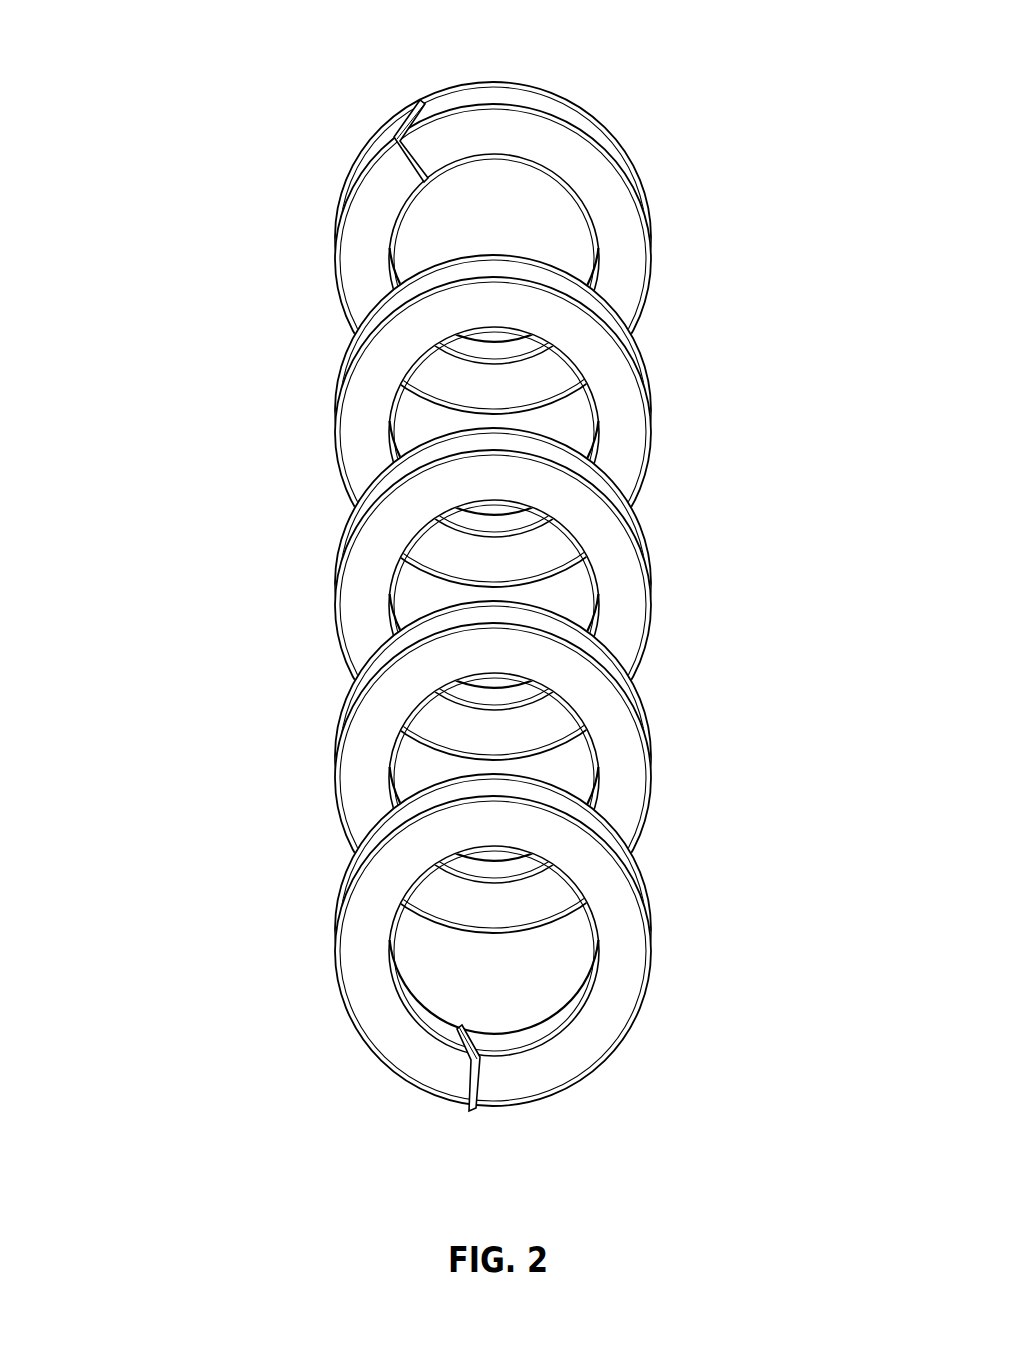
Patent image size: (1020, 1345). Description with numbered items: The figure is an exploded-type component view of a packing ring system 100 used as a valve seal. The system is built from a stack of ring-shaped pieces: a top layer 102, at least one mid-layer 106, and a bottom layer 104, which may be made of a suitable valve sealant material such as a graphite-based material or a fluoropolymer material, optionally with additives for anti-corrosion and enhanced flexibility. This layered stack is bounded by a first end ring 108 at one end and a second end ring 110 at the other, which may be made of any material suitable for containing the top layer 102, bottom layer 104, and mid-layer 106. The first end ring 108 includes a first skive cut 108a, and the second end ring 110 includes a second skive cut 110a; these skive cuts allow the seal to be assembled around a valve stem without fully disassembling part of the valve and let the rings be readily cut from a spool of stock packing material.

The packing ring system 100 is at (226, 84).
The top layer 102 is at (653, 422).
The bottom layer 104 is at (653, 767).
The mid-layer 106 is at (653, 588).
The first end ring 108 is at (653, 255).
The first skive cut 108a is at (407, 118).
The second end ring 110 is at (653, 962).
The second skive cut 110a is at (480, 1085).